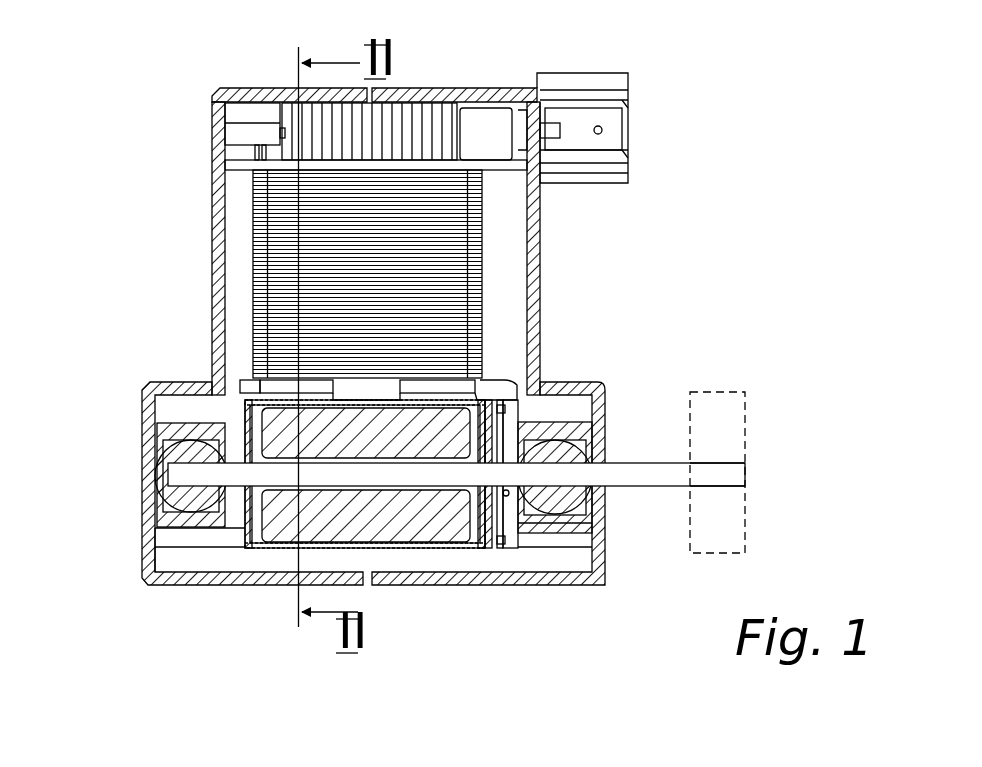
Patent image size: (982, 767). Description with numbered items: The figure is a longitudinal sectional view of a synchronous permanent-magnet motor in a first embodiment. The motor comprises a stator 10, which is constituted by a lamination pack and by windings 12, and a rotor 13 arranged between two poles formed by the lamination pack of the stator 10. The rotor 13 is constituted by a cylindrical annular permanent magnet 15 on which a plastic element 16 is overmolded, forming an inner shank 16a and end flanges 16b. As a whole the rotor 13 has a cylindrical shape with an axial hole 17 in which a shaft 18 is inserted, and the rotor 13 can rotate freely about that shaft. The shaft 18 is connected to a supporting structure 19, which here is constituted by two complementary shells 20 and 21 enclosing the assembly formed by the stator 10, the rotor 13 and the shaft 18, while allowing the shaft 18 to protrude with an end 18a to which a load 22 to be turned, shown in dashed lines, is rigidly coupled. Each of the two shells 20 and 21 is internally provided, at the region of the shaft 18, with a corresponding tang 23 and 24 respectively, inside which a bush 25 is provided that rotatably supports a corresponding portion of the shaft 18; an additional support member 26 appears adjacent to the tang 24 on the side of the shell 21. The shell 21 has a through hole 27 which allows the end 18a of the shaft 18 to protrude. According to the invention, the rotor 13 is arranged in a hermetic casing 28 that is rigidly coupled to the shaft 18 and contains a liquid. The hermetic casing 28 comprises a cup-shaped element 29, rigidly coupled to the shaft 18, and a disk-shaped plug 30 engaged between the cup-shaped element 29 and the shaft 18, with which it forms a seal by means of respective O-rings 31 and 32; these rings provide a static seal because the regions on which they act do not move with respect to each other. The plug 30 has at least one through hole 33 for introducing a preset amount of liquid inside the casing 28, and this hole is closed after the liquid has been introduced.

The stator 10 is at (487, 212).
The windings 12 is at (440, 265).
The rotor 13 is at (318, 397).
The cylindrical annular permanent magnet 15 is at (480, 400).
The plastic element 16 is at (353, 494).
The inner shank 16a is at (385, 497).
The end flanges 16b is at (255, 515).
The axial hole 17 is at (432, 466).
The shaft 18 is at (177, 473).
The end of the shaft 18a is at (730, 476).
The supporting structure 19 is at (205, 155).
The shell 20 is at (212, 95).
The shell 21 is at (462, 102).
The load 22 is at (745, 392).
The tang 23 is at (180, 515).
The tang 24 is at (560, 520).
The bush 25 is at (163, 425).
The bearing holder 26 is at (610, 432).
The through hole 27 is at (600, 485).
The hermetic casing 28 is at (367, 395).
The cup-shaped element 29 is at (387, 397).
The disk-shaped plug 30 is at (507, 527).
The O-ring 31 is at (503, 523).
The O-ring 32 is at (518, 443).
The through hole 33 is at (560, 420).